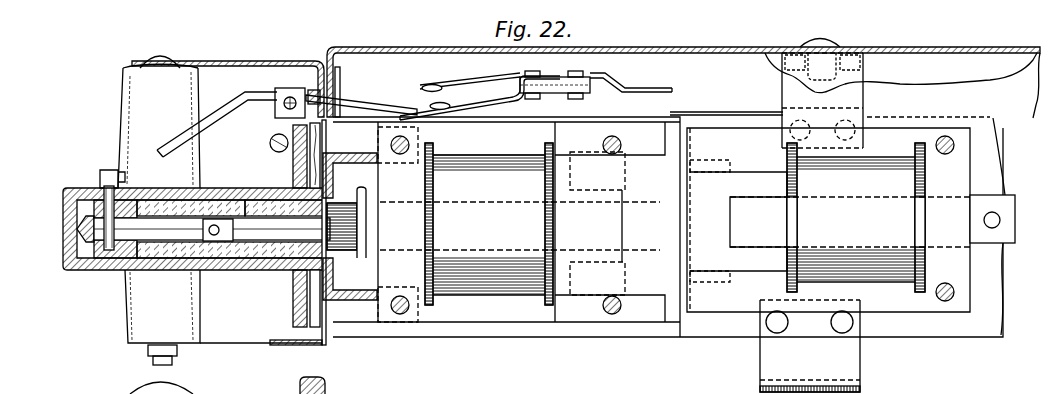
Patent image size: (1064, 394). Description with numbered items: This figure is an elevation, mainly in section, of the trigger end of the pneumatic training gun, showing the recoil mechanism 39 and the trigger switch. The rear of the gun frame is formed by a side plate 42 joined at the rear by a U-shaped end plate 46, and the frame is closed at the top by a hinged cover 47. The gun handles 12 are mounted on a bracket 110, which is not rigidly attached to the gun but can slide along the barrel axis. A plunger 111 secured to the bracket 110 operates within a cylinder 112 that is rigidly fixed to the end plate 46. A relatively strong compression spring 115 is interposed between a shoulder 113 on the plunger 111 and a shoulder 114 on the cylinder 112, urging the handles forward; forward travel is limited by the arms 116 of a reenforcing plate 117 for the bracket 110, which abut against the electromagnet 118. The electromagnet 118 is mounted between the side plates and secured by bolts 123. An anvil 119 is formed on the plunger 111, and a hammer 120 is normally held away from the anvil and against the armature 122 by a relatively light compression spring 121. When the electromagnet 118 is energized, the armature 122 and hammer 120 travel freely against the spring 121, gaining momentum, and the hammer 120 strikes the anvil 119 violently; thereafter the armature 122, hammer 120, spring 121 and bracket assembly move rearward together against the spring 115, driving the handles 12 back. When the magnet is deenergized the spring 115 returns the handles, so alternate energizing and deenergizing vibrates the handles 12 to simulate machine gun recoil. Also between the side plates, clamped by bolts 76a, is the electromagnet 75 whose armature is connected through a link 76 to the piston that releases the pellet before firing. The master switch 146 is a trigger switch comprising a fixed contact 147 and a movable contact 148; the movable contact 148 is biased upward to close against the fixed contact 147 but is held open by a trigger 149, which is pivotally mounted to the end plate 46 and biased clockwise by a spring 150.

The gun handles 12 is at (120, 103).
The recoil mechanism 39 is at (481, 325).
The side plate 42 is at (573, 333).
The U-shaped end plate 46 is at (297, 315).
The hinged cover 47 is at (948, 47).
The electromagnet 75 is at (885, 283).
The link 76 is at (1008, 200).
The bolts 76a is at (960, 146).
The bracket 110 is at (322, 342).
The plunger 111 is at (130, 245).
The cylinder 112 is at (70, 262).
The shoulder 113 is at (262, 197).
The shoulder 114 is at (146, 198).
The compression spring 115 is at (212, 197).
The arms 116 is at (366, 163).
The reenforcing plate 117 is at (326, 330).
The electromagnet 118 is at (498, 290).
The anvil 119 is at (354, 193).
The hammer 120 is at (358, 250).
The compression spring 121 is at (281, 250).
The armature 122 is at (372, 258).
The bolts 123 is at (400, 314).
The master switch 146 is at (418, 101).
The fixed contact 147 is at (440, 87).
The movable contact 148 is at (440, 110).
The trigger 149 is at (240, 100).
The spring 150 is at (270, 100).